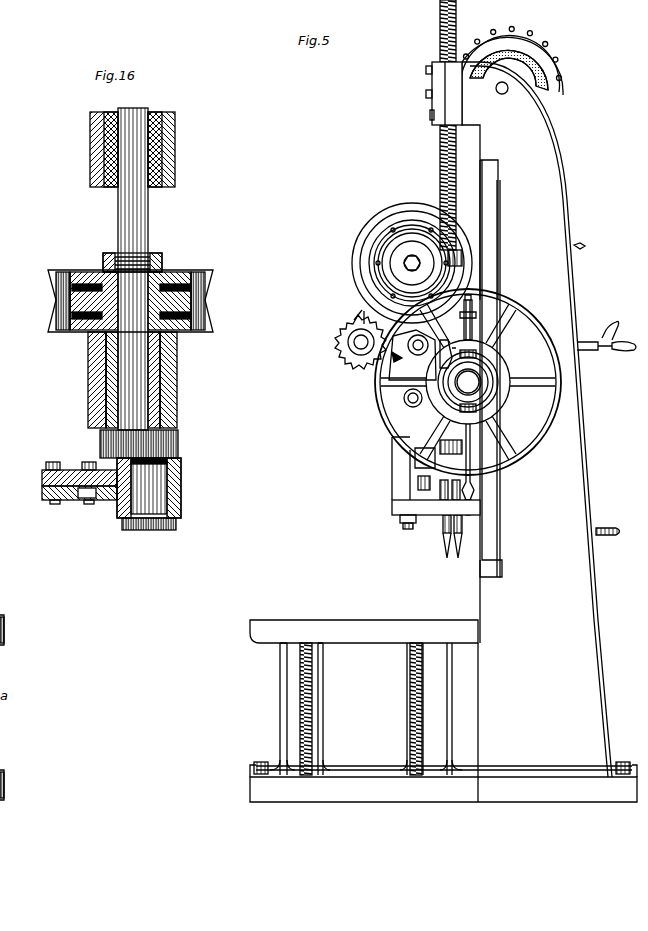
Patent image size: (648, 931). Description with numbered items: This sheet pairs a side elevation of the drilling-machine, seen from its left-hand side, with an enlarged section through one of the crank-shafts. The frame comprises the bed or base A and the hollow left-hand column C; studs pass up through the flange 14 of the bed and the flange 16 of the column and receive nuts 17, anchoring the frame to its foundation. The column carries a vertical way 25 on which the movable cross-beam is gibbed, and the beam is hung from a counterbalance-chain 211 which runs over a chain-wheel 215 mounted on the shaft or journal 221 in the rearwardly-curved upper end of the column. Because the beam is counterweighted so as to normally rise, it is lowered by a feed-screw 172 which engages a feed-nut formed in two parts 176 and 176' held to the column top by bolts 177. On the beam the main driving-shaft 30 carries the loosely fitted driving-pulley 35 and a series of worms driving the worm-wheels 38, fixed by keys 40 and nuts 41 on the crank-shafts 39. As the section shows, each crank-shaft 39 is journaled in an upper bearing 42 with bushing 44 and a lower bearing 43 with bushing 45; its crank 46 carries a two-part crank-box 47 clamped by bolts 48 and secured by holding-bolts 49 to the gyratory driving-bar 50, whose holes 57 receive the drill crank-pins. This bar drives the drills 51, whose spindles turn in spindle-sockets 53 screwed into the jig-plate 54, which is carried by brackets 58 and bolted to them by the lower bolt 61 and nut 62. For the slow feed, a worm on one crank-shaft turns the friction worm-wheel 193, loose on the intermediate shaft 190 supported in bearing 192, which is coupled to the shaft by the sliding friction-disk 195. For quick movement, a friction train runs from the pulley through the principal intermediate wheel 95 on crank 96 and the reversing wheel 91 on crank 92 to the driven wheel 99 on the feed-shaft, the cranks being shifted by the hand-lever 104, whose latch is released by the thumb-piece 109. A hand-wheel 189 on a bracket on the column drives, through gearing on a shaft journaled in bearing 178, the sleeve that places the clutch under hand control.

In FIG. 16, the flange of the bed 14 is at (4, 785).
In FIG. 5, the flange of the bed 14 is at (262, 790).
In FIG. 5, the flange of the column 16 is at (563, 790).
In FIG. 5, the nuts 17 is at (258, 764).
In FIG. 5, the bed A is at (288, 692).
In FIG. 5, the left-hand column C is at (584, 606).
In FIG. 5, the vertical way 25 is at (482, 197).
In FIG. 5, the main driving-shaft 30 is at (468, 382).
In FIG. 5, the driving-pulley 35 is at (385, 430).
In FIG. 16, the worm-wheels 38 is at (56, 298).
In FIG. 16, the crank-shafts 39 is at (148, 212).
In FIG. 16, the keys 40 is at (100, 278).
In FIG. 16, the nuts 41 is at (112, 262).
In FIG. 16, the upper bearing 42 is at (175, 152).
In FIG. 16, the lower bearing 43 is at (177, 368).
In FIG. 16, the bushing 44 is at (175, 118).
In FIG. 16, the bushing 45 is at (162, 396).
In FIG. 16, the crank 46 is at (176, 504).
In FIG. 16, the crank-box 47 is at (44, 474).
In FIG. 16, the bolts 48 is at (181, 480).
In FIG. 16, the holding-bolts 49 is at (88, 462).
In FIG. 16, the gyratory driving-bar 50 is at (42, 494).
In FIG. 5, the drills 51 is at (452, 555).
In FIG. 5, the spindle-sockets 53 is at (452, 533).
In FIG. 5, the jig-plate 54 is at (400, 506).
In FIG. 16, the holes 57 is at (88, 504).
In FIG. 5, the brackets 58 is at (398, 474).
In FIG. 5, the lower bolt 61 is at (404, 530).
In FIG. 5, the nut 62 is at (398, 522).
In FIG. 5, the reversing friction-wheel 91 is at (396, 408).
In FIG. 5, the crank 92 is at (404, 394).
In FIG. 5, the principal intermediate friction-wheel 95 is at (398, 355).
In FIG. 5, the stud or crank 96 is at (418, 340).
In FIG. 5, the driven friction-wheel 99 is at (366, 230).
In FIG. 5, the hand-lever 104 is at (620, 351).
In FIG. 5, the thumb-piece 109 is at (594, 342).
In FIG. 5, the feed-screw 172 is at (440, 12).
In FIG. 5, the feed-nut 176 is at (421, 93).
In FIG. 5, the feed-nut part 176' is at (411, 127).
In FIG. 5, the bolts 177 is at (426, 70).
In FIG. 5, the bearing 178 is at (458, 250).
In FIG. 5, the hand-wheel 189 is at (605, 528).
In FIG. 5, the intermediate shaft 190 is at (352, 350).
In FIG. 5, the bearing 192 is at (360, 318).
In FIG. 5, the worm-wheel 193 is at (340, 330).
In FIG. 5, the sliding friction-disk 195 is at (357, 348).
In FIG. 5, the counterbalance-chain 211 is at (560, 60).
In FIG. 5, the chain-wheel 215 is at (552, 92).
In FIG. 5, the shaft 221 is at (504, 94).